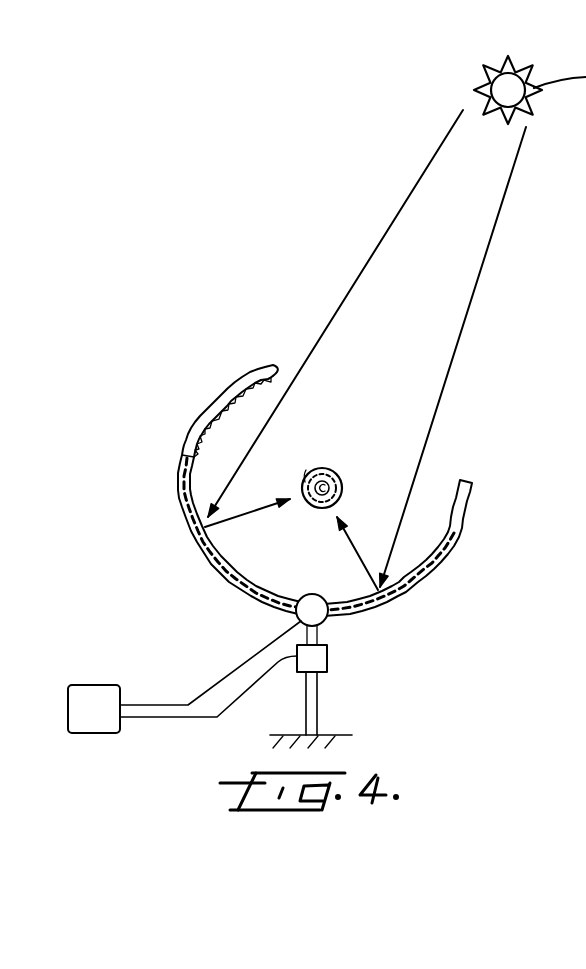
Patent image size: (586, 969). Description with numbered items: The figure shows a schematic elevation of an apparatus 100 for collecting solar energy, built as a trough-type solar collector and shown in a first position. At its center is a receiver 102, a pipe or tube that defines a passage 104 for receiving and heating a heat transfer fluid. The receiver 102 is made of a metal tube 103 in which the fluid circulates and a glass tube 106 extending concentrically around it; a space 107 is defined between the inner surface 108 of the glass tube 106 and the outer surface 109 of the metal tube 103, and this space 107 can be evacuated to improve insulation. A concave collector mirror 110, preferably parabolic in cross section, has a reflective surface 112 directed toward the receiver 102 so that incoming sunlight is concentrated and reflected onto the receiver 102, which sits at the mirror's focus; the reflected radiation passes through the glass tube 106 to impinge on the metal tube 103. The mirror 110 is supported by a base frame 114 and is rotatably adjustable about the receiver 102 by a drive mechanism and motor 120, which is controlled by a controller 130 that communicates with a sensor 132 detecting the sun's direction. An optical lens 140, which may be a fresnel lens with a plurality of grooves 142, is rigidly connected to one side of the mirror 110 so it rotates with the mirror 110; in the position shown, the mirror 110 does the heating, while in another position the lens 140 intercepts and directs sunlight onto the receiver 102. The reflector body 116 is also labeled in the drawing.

The apparatus for collecting solar energy 100 is at (240, 337).
The receiver 102 is at (350, 442).
The metal tube 103 is at (337, 467).
The passage 104 is at (343, 481).
The glass tube 106 is at (323, 460).
The space 107 is at (302, 483).
The inner surface of the glass tube 108 is at (302, 512).
The outer surface of the metal tube 109 is at (323, 509).
The concave collector mirror 110 is at (407, 594).
The reflective surface 112 is at (425, 562).
The base frame 114 is at (318, 690).
The reflector body 116 is at (185, 567).
The drive mechanism and motor 120 is at (313, 613).
The controller 130 is at (107, 698).
The sensor 132 is at (297, 660).
The optical lens 140 is at (211, 405).
The grooves 142 is at (255, 388).